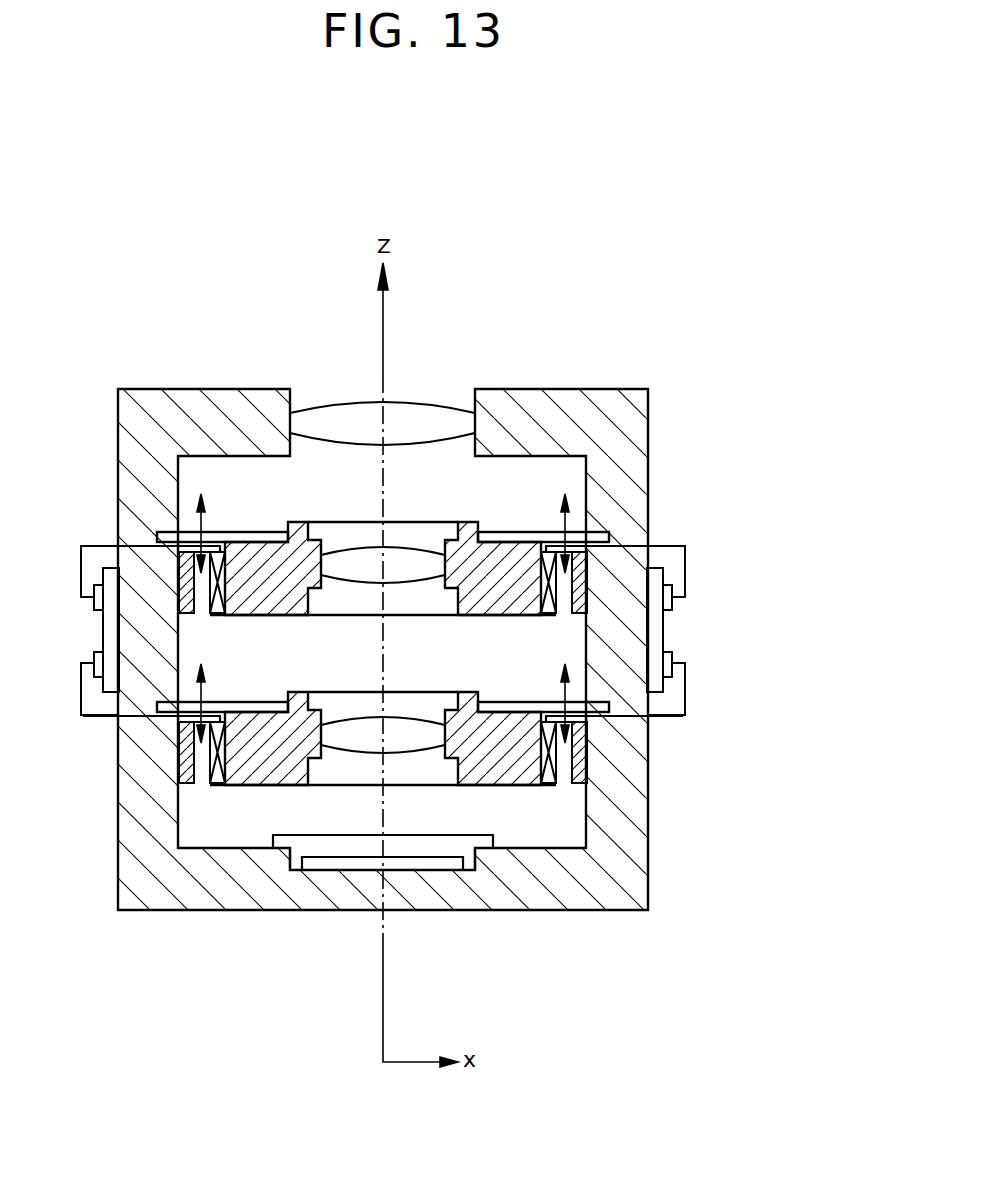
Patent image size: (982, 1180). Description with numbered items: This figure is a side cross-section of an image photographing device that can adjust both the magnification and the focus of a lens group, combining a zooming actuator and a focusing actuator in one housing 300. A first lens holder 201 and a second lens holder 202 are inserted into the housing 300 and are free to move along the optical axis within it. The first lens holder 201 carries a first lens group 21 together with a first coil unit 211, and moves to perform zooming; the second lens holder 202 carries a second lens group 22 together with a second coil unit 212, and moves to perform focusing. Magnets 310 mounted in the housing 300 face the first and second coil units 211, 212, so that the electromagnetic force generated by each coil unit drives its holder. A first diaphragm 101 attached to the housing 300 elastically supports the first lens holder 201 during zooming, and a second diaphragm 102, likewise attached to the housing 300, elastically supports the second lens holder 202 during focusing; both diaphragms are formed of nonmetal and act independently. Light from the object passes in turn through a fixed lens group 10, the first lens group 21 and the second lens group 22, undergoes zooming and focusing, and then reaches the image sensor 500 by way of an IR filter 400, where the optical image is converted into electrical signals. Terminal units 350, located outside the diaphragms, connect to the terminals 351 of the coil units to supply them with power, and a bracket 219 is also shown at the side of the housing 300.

The fixed lens group 10 is at (405, 407).
The first lens group 21 is at (357, 560).
The second lens group 22 is at (357, 740).
The first diaphragm 101 is at (530, 532).
The second diaphragm 102 is at (527, 712).
The first lens holder 201 is at (497, 560).
The second lens holder 202 is at (494, 775).
The first coil unit 211 is at (553, 592).
The second coil unit 212 is at (552, 783).
The bracket 219 is at (667, 547).
The housing 300 is at (170, 410).
The magnets 310 is at (587, 763).
The terminal units 350 is at (657, 630).
The terminals 351 is at (672, 655).
The IR filter 400 is at (297, 835).
The image sensor 500 is at (320, 862).